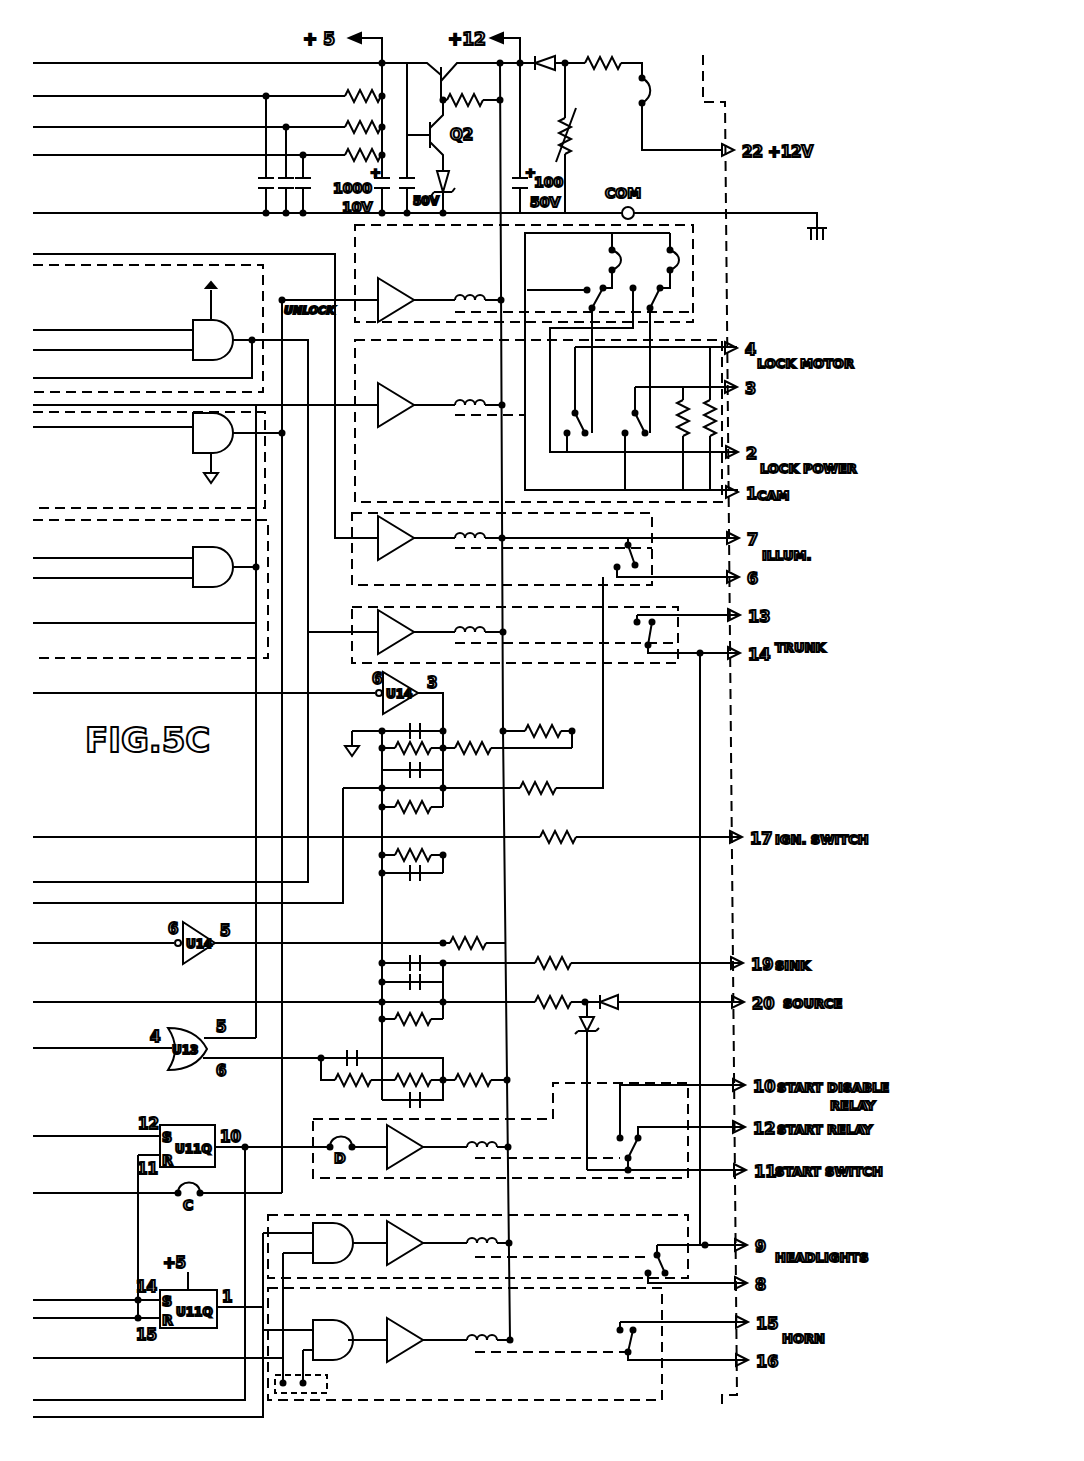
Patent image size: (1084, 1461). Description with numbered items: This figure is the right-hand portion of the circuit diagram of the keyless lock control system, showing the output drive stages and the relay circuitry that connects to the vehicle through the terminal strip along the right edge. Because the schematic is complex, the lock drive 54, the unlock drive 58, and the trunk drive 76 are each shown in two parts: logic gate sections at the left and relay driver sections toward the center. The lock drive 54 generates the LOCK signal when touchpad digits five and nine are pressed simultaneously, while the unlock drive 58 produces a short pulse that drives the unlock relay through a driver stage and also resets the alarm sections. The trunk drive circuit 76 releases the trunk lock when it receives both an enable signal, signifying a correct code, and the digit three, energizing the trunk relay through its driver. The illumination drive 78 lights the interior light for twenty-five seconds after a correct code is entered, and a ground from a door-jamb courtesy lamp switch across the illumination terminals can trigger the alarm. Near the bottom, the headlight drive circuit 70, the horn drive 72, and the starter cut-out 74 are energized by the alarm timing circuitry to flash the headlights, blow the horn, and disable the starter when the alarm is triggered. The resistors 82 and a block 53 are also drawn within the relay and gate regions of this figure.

The AND gate logic block 53 is at (267, 577).
The lock drive 54 is at (567, 367).
The unlock drive 58 is at (257, 473).
The headlight drive circuit 70 is at (553, 1215).
The horn drive 72 is at (420, 1398).
The starter cut-out 74 is at (608, 1108).
The trunk drive circuit 76 is at (160, 270).
The illumination drive 78 is at (648, 577).
The resistors 82 is at (696, 418).